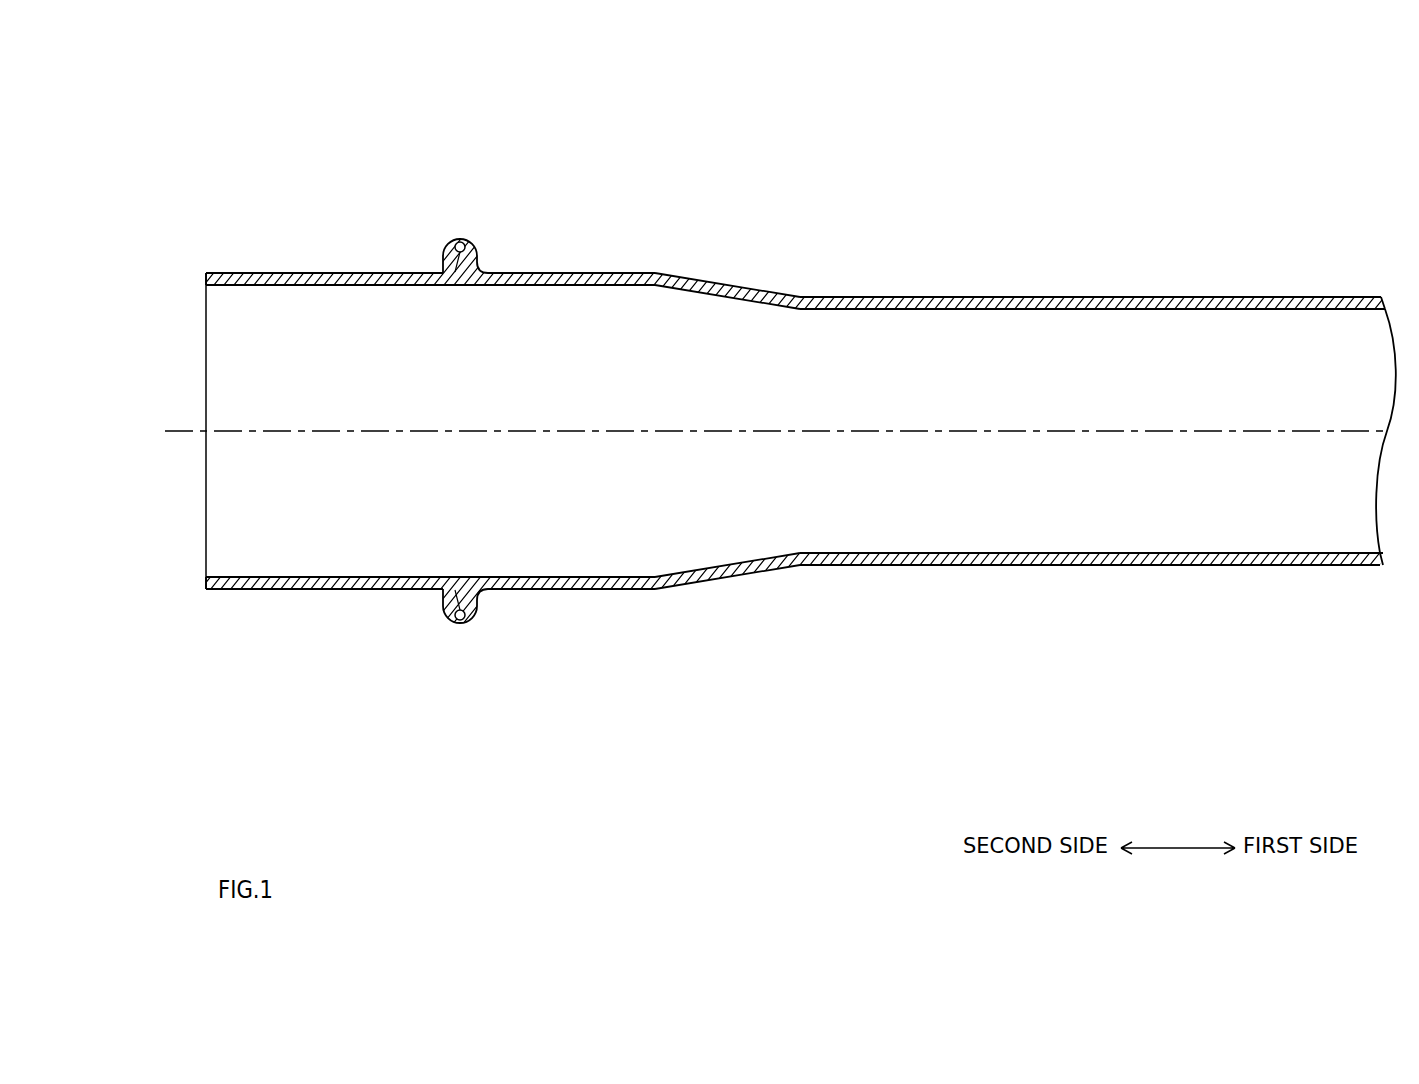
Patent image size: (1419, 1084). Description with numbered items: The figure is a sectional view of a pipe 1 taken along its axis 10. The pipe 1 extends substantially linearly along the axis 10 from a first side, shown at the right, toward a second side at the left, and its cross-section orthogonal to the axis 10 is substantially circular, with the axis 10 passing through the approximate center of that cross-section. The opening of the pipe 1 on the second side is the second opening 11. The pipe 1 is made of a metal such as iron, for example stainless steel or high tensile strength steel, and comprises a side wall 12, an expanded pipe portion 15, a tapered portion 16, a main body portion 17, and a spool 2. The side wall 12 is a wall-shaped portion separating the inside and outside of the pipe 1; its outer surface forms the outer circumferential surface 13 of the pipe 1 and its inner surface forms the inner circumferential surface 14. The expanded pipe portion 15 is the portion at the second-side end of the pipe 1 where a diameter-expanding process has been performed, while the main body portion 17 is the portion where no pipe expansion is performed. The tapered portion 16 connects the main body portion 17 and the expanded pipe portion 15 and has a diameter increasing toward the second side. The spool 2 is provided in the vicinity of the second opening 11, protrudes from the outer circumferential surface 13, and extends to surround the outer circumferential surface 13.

The pipe 1 is at (1268, 168).
The spool 2 is at (463, 231).
The axis 10 is at (965, 430).
The second opening 11 is at (206, 384).
The side wall 12 is at (206, 279).
The outer circumferential surface 13 is at (309, 274).
The inner circumferential surface 14 is at (318, 286).
The expanded pipe portion 15 is at (534, 250).
The tapered portion 16 is at (728, 275).
The main body portion 17 is at (1026, 283).